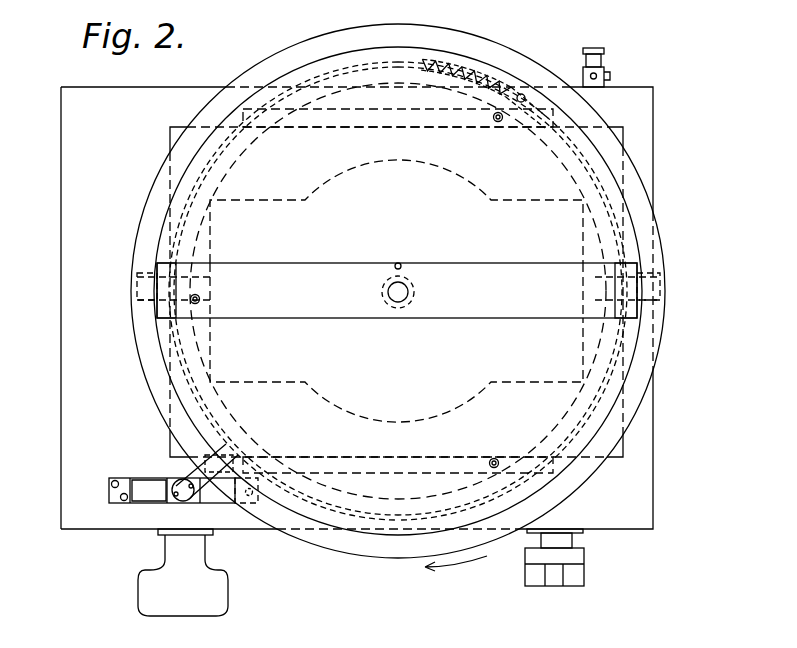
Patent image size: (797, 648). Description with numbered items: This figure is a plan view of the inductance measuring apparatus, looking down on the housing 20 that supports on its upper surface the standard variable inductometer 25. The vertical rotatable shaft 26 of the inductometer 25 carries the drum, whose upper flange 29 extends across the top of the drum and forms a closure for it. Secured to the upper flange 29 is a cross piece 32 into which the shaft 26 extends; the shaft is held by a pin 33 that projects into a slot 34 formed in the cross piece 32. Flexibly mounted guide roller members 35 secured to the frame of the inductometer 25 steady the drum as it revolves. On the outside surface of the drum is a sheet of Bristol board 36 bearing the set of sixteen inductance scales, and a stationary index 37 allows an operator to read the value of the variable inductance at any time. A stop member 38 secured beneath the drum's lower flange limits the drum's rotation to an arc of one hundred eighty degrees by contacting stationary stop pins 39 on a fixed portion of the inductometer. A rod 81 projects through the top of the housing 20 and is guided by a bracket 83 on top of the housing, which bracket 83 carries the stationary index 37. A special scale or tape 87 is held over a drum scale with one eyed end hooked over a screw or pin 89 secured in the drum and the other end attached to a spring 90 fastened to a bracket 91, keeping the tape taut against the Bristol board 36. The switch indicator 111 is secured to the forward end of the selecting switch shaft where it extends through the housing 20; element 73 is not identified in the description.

The housing 20 is at (61, 333).
The variable inductometer 25 is at (352, 418).
The vertical rotatable shaft 26 is at (404, 301).
The upper flange 29 is at (656, 361).
The cross piece 32 is at (460, 269).
The pin 33 is at (401, 263).
The slot 34 is at (403, 316).
The guide roller members 35 is at (494, 122).
The sheet of Bristol board 36 is at (198, 180).
The stationary index 37 is at (216, 472).
The stop member 38 is at (667, 305).
The stationary stop pins 39 is at (141, 275).
The knob 73 is at (216, 590).
The rod 81 is at (153, 503).
The bracket 83 is at (150, 478).
The scale or tape 87 is at (607, 196).
The screw or pin 89 is at (194, 393).
The spring 90 is at (465, 60).
The bracket 91 is at (441, 58).
The switch indicator 111 is at (556, 578).